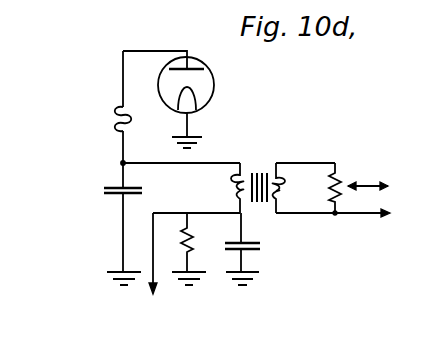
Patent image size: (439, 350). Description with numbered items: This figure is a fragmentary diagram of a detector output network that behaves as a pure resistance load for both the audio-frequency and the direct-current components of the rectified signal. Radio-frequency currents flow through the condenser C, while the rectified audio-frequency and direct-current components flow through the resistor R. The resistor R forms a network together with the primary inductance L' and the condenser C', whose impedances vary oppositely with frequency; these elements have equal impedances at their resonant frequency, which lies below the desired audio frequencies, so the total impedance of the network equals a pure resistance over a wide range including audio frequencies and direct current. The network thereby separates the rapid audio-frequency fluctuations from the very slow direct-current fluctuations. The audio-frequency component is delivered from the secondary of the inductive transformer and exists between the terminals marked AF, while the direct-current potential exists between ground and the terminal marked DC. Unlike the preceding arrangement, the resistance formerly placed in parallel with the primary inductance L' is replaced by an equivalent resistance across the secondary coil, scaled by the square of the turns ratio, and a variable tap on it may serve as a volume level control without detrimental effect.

The condenser C is at (109, 191).
The resistor R is at (183, 241).
The condenser C' is at (231, 249).
The primary inductance L' is at (221, 188).
The direct-current terminal DC is at (159, 267).
The audio-frequency terminals AF is at (398, 170).